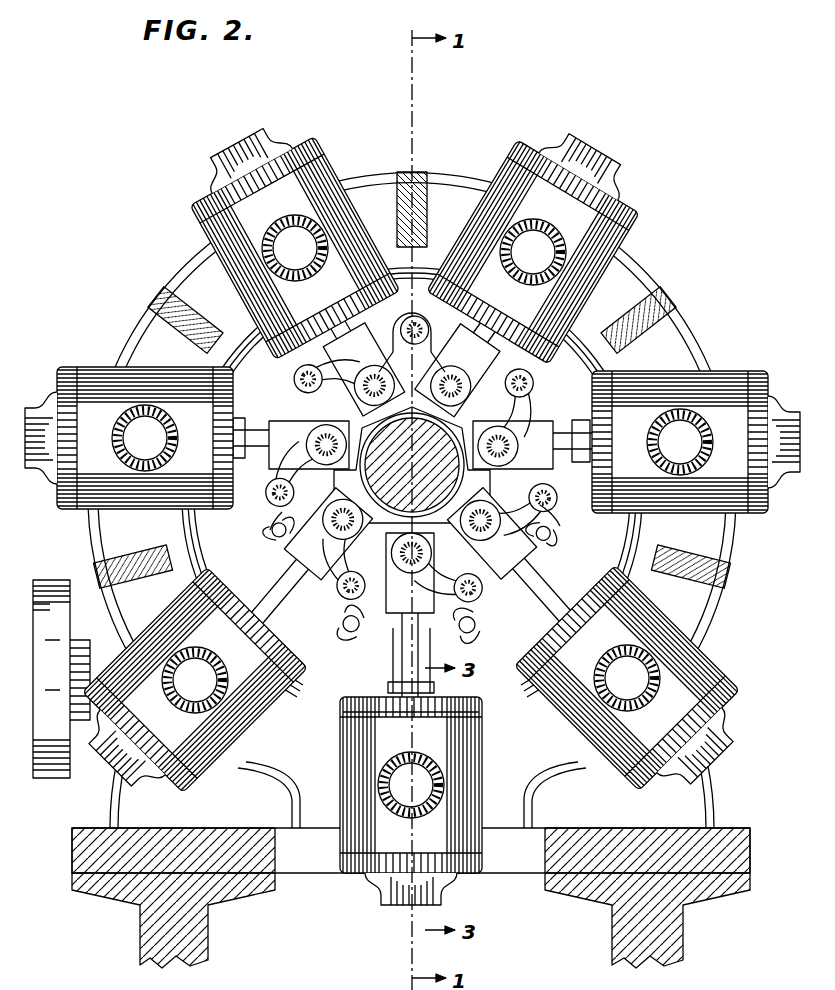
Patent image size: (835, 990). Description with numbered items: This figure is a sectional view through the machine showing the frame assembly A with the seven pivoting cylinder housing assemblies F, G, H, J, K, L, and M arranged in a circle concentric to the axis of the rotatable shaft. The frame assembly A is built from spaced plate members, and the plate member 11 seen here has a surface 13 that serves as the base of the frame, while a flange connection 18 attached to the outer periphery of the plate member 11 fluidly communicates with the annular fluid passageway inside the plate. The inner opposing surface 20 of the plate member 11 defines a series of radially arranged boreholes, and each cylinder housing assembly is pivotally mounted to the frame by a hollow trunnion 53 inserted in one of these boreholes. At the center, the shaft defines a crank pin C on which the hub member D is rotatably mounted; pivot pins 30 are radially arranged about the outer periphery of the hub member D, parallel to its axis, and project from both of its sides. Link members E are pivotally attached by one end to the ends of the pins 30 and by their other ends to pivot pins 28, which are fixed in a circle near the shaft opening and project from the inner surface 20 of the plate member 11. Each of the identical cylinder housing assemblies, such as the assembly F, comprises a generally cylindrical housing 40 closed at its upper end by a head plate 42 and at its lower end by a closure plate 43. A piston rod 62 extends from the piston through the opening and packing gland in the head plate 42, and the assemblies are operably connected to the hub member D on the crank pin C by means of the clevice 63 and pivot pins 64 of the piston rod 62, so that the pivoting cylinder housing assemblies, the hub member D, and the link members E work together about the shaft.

The plate member 11 is at (206, 266).
The surface 13 is at (720, 828).
The flange connection 18 is at (40, 740).
The inner opposing surface 20 is at (706, 544).
The pivot pin 28 is at (560, 530).
The pivot pin 30 is at (474, 600).
The housing 40 is at (410, 526).
The head plate 42 is at (462, 703).
The closure plate 43 is at (532, 152).
The hollow trunnion 53 is at (310, 225).
The piston rod 62 is at (250, 470).
The clevice 63 is at (458, 355).
The pivot pin 64 is at (300, 412).
The frame assembly A is at (660, 294).
The crank pin C is at (470, 400).
The hub member D is at (558, 525).
The link member E is at (266, 535).
The cylinder housing assembly F is at (370, 852).
The cylinder housing assembly G is at (710, 668).
The cylinder housing assembly H is at (732, 371).
The cylinder housing assembly J is at (630, 228).
The cylinder housing assembly K is at (203, 210).
The cylinder housing assembly L is at (96, 366).
The cylinder housing assembly M is at (250, 706).